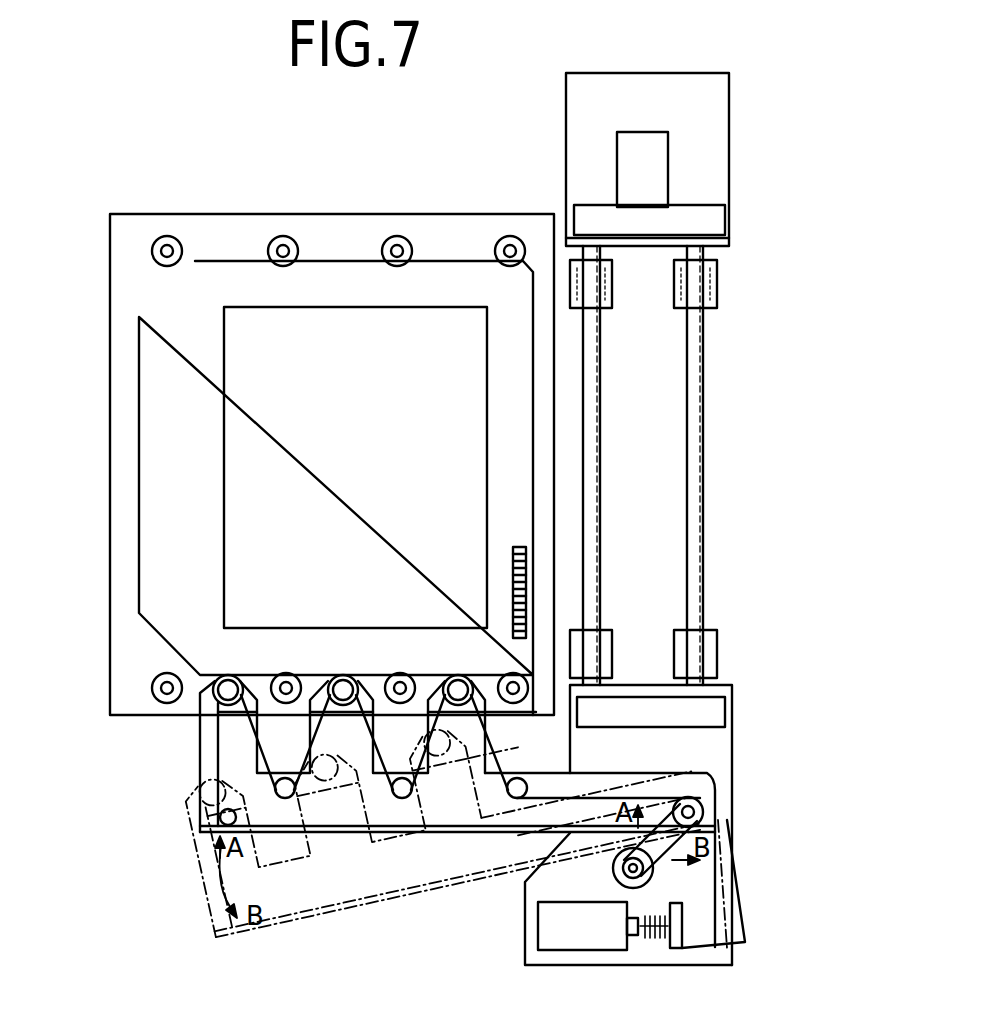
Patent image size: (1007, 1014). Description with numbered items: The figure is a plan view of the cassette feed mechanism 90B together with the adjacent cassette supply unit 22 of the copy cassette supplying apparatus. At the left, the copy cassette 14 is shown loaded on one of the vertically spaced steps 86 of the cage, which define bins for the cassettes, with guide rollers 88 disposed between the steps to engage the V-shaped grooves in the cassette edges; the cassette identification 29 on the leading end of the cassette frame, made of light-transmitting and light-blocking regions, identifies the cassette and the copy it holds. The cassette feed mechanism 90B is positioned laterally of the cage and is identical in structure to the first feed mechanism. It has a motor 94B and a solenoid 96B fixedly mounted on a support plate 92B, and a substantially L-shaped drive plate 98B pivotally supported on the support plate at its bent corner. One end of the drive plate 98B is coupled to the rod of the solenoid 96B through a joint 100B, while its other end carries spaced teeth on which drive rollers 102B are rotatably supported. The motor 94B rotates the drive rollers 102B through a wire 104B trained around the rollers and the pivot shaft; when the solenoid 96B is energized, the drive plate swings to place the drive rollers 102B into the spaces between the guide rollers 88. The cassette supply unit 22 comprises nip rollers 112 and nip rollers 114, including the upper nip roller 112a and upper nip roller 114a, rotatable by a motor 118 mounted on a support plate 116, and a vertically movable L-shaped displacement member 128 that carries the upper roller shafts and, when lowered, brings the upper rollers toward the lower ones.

The copy cassette 14 is at (137, 496).
The cassette supply unit 22 is at (745, 250).
The cassette identification 29 is at (513, 570).
The steps 86 is at (236, 237).
The guide rollers 88 is at (167, 250).
The cassette feed mechanism 90B is at (181, 844).
The support plate 92B is at (715, 737).
The motor 94B is at (618, 873).
The solenoid 96B is at (583, 942).
The drive plate 98B is at (707, 828).
The joint 100B is at (680, 938).
The drive rollers 102B is at (350, 680).
The wire 104B is at (560, 797).
The nip rollers 112 is at (594, 422).
The upper nip roller 112a is at (604, 290).
The nip rollers 114 is at (705, 447).
The upper nip roller 114a is at (716, 290).
The support plate 116 is at (710, 148).
The motor 118 is at (641, 148).
The displacement member 128 is at (706, 210).